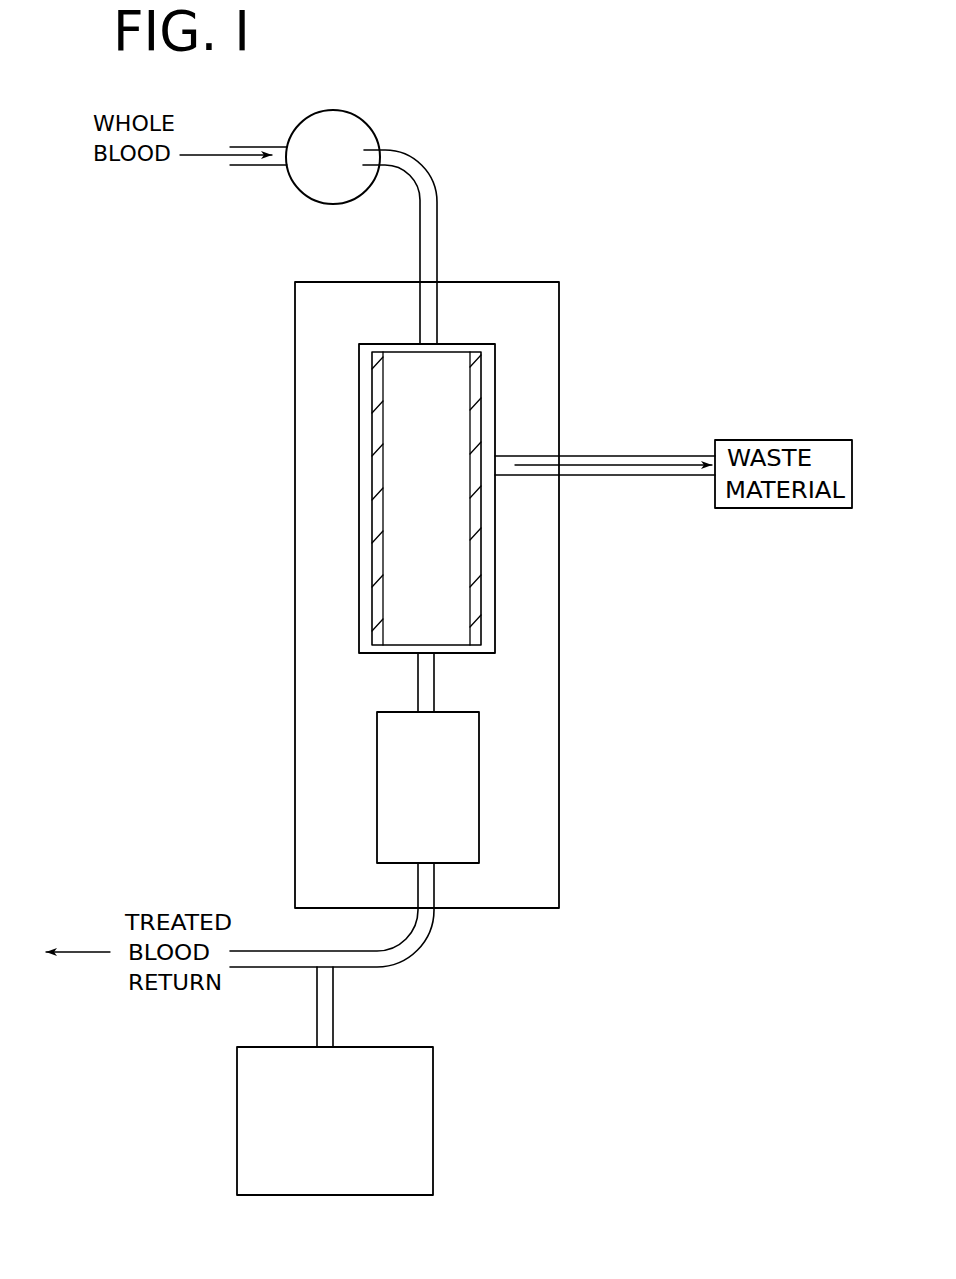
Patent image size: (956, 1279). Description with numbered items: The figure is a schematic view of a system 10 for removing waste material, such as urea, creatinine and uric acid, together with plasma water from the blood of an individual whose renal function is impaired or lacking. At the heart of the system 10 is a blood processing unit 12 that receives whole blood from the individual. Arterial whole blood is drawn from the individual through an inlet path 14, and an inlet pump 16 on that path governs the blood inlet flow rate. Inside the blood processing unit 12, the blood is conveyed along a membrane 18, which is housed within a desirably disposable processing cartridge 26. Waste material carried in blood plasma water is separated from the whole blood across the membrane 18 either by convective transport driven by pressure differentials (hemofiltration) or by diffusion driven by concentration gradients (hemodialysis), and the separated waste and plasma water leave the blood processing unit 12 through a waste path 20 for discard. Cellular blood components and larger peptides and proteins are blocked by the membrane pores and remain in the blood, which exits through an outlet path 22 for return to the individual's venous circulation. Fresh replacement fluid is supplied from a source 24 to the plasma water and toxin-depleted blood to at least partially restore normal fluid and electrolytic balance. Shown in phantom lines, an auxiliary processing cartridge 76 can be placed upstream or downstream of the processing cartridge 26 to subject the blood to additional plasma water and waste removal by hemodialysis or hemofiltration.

The system 10 is at (566, 246).
The blood processing unit 12 is at (565, 352).
The inlet path 14 is at (447, 205).
The inlet pump 16 is at (346, 105).
The membrane 18 is at (381, 388).
The waste path 20 is at (605, 453).
The outlet path 22 is at (402, 963).
The source 24 is at (427, 1110).
The processing cartridge 26 is at (358, 447).
The auxiliary processing cartridge 76 is at (484, 776).